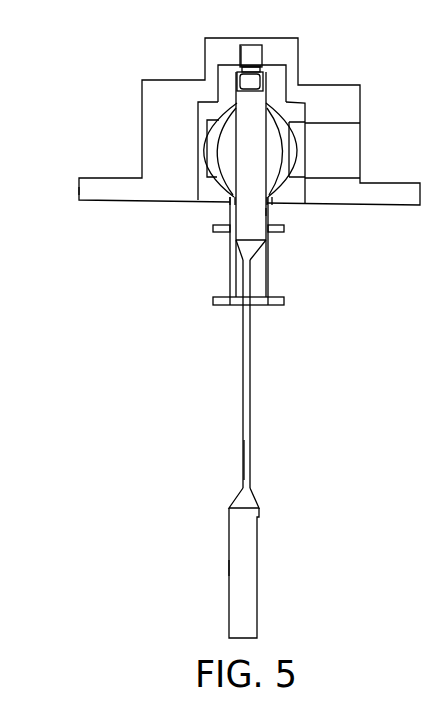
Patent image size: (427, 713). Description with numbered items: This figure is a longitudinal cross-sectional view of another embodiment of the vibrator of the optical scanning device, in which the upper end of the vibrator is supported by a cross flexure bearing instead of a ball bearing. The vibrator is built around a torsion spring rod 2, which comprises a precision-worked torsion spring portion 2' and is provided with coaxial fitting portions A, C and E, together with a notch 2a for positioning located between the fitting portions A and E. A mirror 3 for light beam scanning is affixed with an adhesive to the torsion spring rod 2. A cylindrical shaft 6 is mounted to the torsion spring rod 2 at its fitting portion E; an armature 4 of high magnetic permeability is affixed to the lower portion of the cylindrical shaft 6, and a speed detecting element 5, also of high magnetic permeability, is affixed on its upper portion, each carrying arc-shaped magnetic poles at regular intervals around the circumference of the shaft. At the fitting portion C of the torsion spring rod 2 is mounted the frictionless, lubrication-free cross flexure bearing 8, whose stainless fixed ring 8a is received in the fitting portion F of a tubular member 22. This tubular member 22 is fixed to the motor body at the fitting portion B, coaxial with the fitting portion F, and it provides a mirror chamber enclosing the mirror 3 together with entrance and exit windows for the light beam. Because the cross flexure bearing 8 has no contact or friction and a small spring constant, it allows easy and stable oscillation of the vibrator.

The tubular member 22 is at (148, 128).
The cross flexure bearing 8 is at (257, 63).
The fixed ring 8a is at (247, 52).
The mirror 3 is at (223, 160).
The cylindrical shaft 6 is at (229, 264).
The speed detecting element 5 is at (281, 230).
The armature 4 is at (213, 304).
The torsion spring portion 2' is at (226, 374).
The torsion spring rod 2 is at (259, 474).
The notch for positioning 2a is at (258, 545).
The fitting portion A is at (229, 568).
The fitting portion B is at (79, 187).
The fitting portion C is at (256, 83).
The fitting portion E is at (267, 212).
The fitting portion F is at (258, 66).